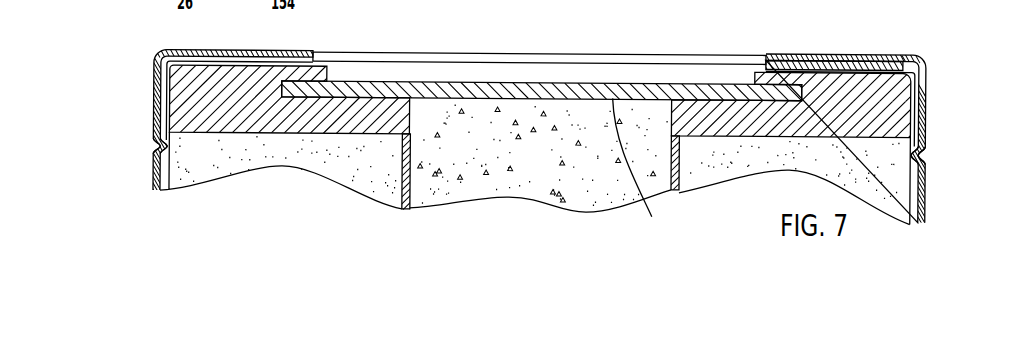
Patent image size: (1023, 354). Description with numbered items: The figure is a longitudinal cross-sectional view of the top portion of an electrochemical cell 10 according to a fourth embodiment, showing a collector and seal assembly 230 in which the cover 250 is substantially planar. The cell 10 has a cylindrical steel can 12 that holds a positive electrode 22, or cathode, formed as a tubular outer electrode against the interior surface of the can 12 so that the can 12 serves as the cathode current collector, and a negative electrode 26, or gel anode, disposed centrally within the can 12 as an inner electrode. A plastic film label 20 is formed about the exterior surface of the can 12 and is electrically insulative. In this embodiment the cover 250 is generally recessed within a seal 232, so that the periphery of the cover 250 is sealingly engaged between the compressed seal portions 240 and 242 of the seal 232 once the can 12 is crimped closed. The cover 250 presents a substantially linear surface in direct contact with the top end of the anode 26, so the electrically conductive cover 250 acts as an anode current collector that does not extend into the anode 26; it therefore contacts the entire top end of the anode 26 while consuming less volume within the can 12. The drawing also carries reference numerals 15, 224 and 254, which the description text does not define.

The electrochemical cell 10 is at (915, 27).
The steel can 12 is at (917, 182).
The bead 15 is at (925, 147).
The plastic film label 20 is at (926, 101).
The positive electrode 22 is at (242, 163).
The negative electrode 26 is at (533, 195).
The separator 224 is at (401, 175).
The collector and seal assembly 230 is at (375, 60).
The seal 232 is at (864, 83).
The compressed seal portion 240 is at (748, 117).
The compressed seal portion 242 is at (779, 66).
The cover 250 is at (459, 72).
The separator fold 254 is at (645, 166).